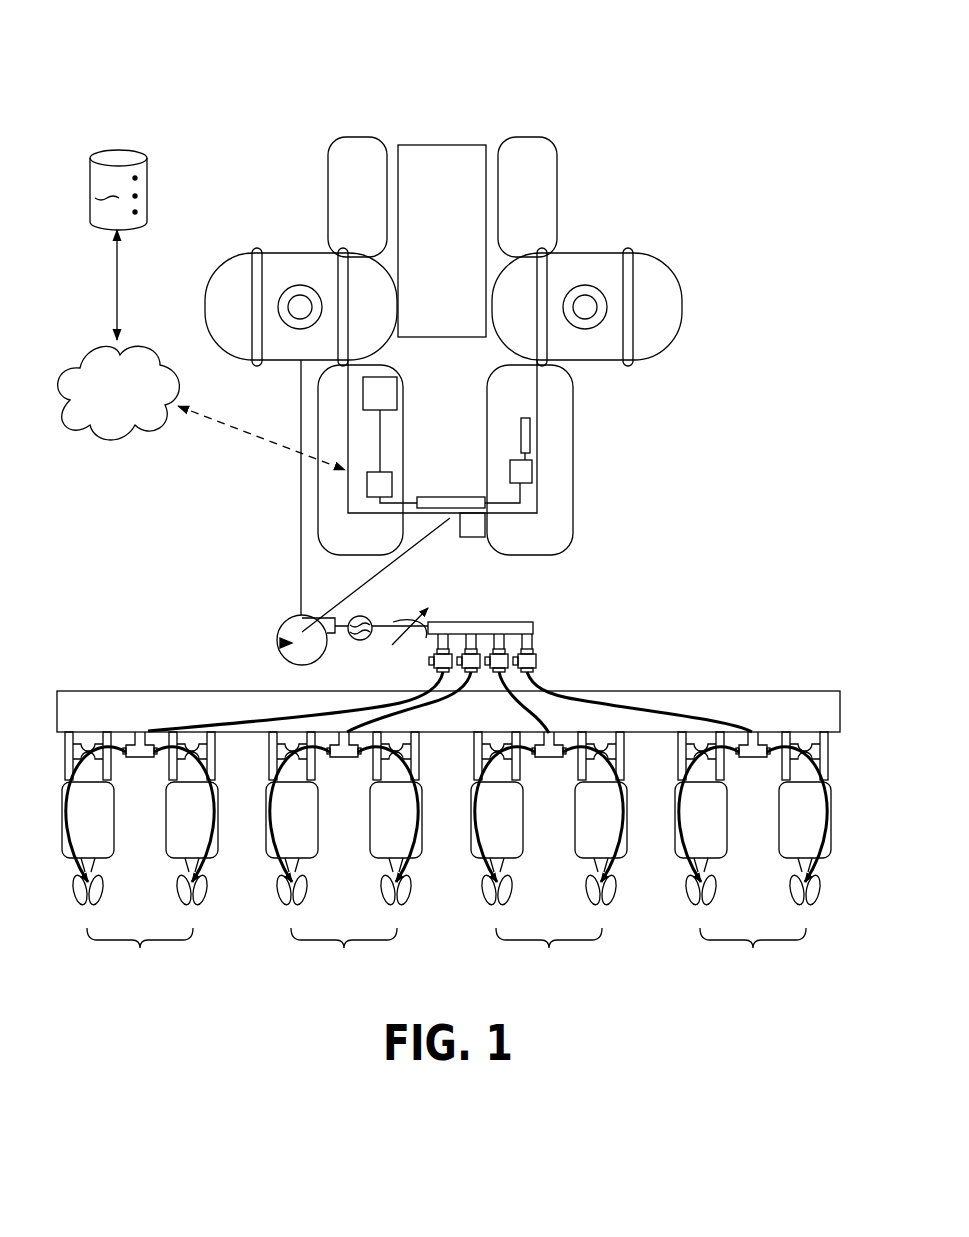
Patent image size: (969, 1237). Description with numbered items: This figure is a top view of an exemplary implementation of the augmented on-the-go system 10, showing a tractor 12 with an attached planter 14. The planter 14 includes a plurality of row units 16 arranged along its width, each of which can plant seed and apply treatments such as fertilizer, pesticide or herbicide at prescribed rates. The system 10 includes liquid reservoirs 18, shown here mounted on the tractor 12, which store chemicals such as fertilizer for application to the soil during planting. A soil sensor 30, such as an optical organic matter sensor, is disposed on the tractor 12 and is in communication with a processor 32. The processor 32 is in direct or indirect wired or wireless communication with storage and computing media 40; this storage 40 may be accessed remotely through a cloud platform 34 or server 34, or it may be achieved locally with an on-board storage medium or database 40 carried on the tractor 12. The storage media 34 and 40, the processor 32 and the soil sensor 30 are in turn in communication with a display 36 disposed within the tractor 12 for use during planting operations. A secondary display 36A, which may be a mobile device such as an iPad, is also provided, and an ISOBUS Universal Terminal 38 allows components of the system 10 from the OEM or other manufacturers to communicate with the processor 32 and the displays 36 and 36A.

The augmented on-the-go system 10 is at (658, 58).
The tractor 12 is at (525, 137).
The planter 14 is at (748, 691).
The row unit 16 is at (446, 857).
The liquid reservoir 18 is at (217, 270).
The soil sensor 30 is at (473, 537).
The processor 32 is at (392, 485).
The cloud platform 34 is at (201, 350).
The display 36 is at (473, 497).
The secondary display 36A is at (530, 437).
The ISOBUS Universal Terminal 38 is at (510, 477).
The storage and computing media 40 is at (148, 200).